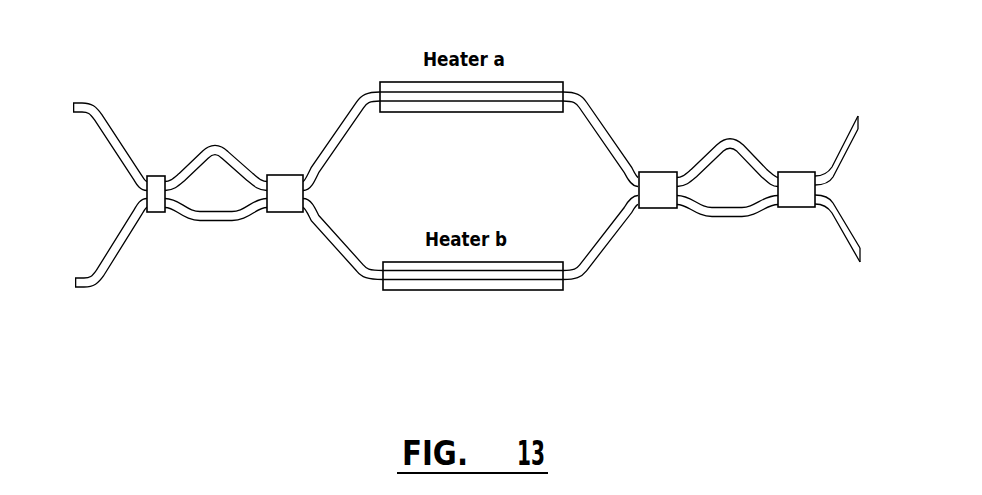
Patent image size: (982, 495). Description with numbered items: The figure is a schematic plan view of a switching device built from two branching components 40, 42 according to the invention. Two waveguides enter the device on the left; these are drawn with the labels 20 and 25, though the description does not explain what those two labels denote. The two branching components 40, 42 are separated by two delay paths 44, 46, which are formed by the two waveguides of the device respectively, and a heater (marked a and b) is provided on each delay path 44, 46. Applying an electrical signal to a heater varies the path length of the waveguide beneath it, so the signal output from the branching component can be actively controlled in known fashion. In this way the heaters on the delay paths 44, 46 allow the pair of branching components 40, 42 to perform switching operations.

The first input waveguide 20 is at (102, 124).
The second input waveguide 25 is at (104, 263).
The branching component 40 is at (213, 233).
The branching component 42 is at (724, 229).
The delay path 44 is at (598, 120).
The delay path 46 is at (605, 240).